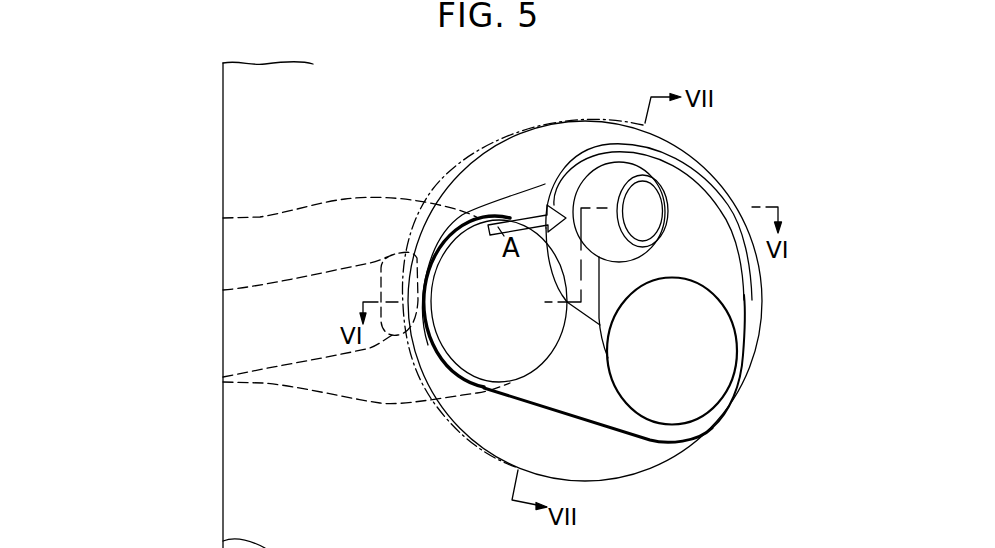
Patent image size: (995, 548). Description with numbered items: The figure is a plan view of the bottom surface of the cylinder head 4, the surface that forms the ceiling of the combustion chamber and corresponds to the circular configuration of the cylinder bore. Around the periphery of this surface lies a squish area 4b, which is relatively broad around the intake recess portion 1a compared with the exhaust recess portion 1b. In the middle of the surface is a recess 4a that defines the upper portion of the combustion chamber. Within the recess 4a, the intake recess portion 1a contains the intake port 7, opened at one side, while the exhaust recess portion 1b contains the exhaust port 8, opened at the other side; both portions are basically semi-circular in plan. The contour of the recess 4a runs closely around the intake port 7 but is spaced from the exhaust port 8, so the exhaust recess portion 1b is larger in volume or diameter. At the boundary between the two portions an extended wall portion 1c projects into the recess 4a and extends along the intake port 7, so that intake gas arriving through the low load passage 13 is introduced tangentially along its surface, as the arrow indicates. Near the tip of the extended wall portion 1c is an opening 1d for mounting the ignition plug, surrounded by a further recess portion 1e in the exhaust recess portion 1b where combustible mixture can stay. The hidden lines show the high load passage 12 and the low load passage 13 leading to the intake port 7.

The cylinder head 4 is at (404, 156).
The recess 4a is at (622, 428).
The squish area 4b is at (484, 437).
The intake recess portion 1a is at (469, 373).
The exhaust recess portion 1b is at (711, 233).
The extended wall portion 1c is at (510, 208).
The opening 1d is at (649, 207).
The further recess portion 1e is at (613, 172).
The intake port 7 is at (496, 319).
The exhaust port 8 is at (676, 364).
The high load passage 12 is at (302, 385).
The low load passage 13 is at (264, 366).